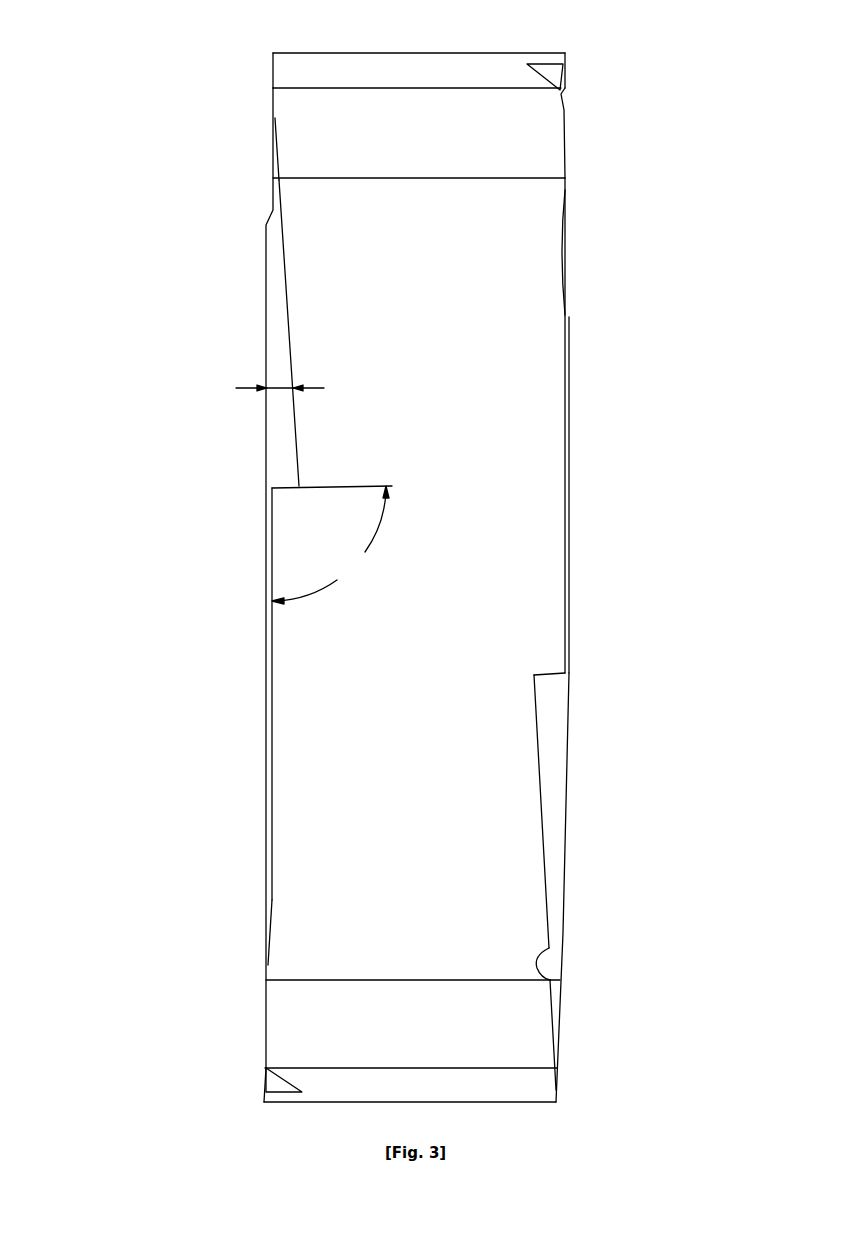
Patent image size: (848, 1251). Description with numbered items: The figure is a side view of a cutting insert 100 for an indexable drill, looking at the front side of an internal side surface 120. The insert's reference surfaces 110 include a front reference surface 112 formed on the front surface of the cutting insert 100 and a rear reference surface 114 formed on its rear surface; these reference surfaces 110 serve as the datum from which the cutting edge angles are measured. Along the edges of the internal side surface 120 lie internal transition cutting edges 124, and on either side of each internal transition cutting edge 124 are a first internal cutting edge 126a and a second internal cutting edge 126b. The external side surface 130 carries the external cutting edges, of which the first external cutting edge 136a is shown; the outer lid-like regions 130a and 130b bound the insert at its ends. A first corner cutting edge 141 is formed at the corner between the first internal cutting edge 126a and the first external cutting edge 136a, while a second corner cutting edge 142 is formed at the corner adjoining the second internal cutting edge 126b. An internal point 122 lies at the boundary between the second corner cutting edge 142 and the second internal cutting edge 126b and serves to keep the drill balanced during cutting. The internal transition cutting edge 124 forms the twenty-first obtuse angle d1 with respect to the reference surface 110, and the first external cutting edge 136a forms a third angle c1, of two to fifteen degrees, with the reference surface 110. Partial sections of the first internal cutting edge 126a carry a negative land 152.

The cutting insert 100 is at (82, 28).
The reference surfaces 110 is at (452, 442).
The front reference surface 112 is at (266, 338).
The rear reference surface 114 is at (567, 787).
The internal side surfaces 120 is at (335, 690).
The internal point 122 is at (287, 178).
The internal transition cutting edges 124 is at (276, 487).
The first internal cutting edge 126a is at (568, 425).
The second internal cutting edge 126b is at (287, 292).
The external side surface 130 is at (440, 577).
The upper lid panel 130a is at (310, 65).
The lower lid panel 130b is at (510, 1080).
The first external cutting edge 136a is at (548, 76).
The first corner cutting edge 141 is at (563, 137).
The second corner cutting edge 142 is at (276, 118).
The negative land 152 is at (565, 260).
The third angle c1 is at (267, 387).
The twenty-first obtuse angle d1 is at (330, 545).